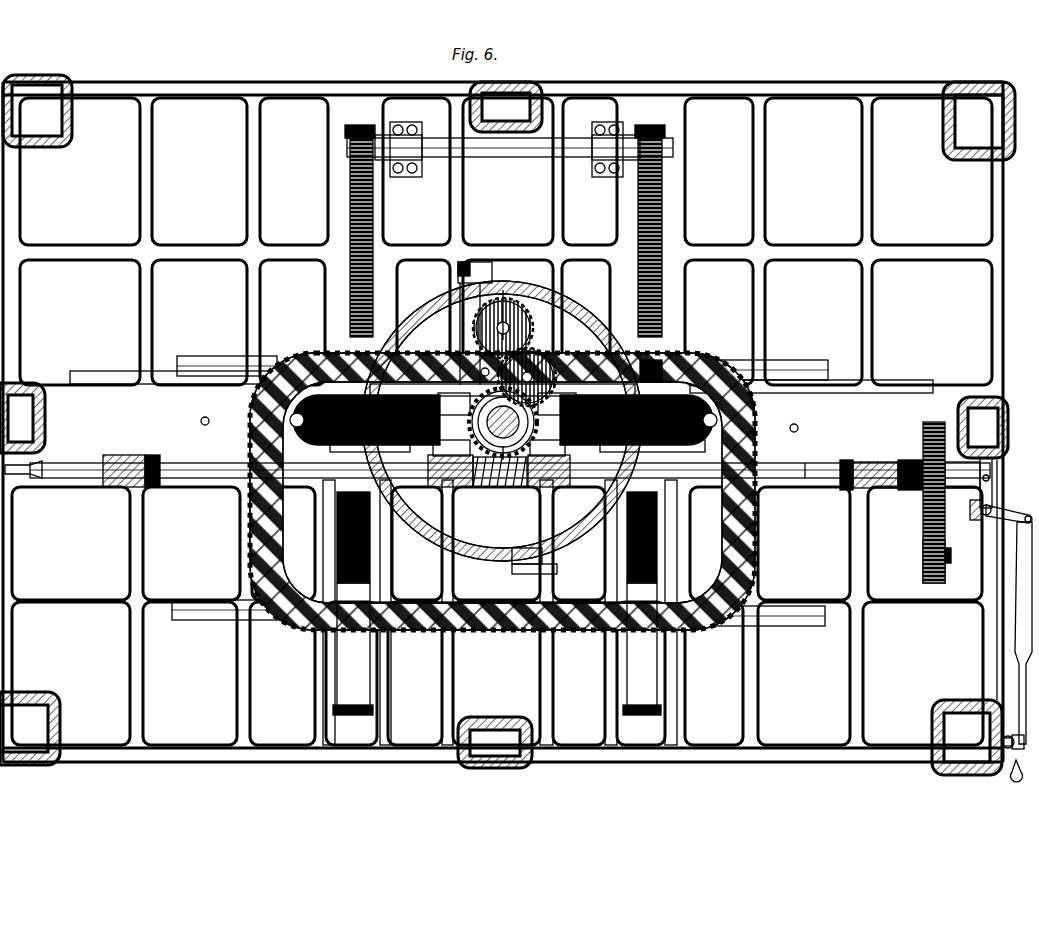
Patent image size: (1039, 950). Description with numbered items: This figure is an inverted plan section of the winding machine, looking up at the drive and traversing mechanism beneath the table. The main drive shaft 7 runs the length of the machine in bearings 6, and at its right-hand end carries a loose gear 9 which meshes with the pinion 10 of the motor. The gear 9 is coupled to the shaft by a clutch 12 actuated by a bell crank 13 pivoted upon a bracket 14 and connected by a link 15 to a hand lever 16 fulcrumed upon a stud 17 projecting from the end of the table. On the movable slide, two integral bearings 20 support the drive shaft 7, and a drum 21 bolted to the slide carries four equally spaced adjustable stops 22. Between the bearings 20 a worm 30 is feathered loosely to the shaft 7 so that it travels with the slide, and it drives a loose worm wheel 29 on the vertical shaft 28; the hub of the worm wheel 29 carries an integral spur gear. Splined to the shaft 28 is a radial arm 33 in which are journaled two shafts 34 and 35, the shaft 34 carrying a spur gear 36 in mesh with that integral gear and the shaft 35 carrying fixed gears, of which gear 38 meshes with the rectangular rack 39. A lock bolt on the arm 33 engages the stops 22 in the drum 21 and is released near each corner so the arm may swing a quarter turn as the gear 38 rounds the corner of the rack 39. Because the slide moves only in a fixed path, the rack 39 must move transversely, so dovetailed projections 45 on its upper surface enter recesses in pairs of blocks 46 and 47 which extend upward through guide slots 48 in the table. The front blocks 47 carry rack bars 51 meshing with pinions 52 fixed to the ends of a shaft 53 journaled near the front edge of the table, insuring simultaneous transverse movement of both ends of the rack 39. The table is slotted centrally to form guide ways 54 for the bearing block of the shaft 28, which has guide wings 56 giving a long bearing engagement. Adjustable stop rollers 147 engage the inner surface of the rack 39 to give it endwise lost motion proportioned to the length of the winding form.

The bearings 6 is at (120, 457).
The main drive shaft 7 is at (805, 465).
The loose gear 9 is at (923, 424).
The pinion 10 is at (923, 566).
The clutch 12 is at (994, 475).
The bell crank 13 is at (1000, 514).
The bracket 14 is at (974, 520).
The link 15 is at (1023, 582).
The hand lever 16 is at (1012, 775).
The stud 17 is at (1002, 737).
The bearings 20 is at (440, 488).
The drum 21 is at (578, 318).
The adjustable stops 22 is at (445, 320).
The vertical shaft 28 is at (515, 448).
The worm wheel 29 is at (485, 488).
The worm 30 is at (500, 488).
The radial arm 33 is at (481, 372).
The shaft 34 is at (532, 342).
The shaft 35 is at (510, 300).
The spur gear 36 is at (550, 362).
The spur gear 38 is at (520, 310).
The rectangular rack 39 is at (258, 402).
The dovetailed projections 45 is at (803, 376).
The blocks 46 is at (497, 649).
The blocks 47 is at (340, 345).
The guide slots 48 is at (337, 551).
The rack bars 51 is at (350, 210).
The pinions 52 is at (380, 134).
The shaft 53 is at (508, 157).
The guide ways 54 is at (410, 395).
The guide wings 56 is at (513, 412).
The adjustable stop rollers 147 is at (252, 440).